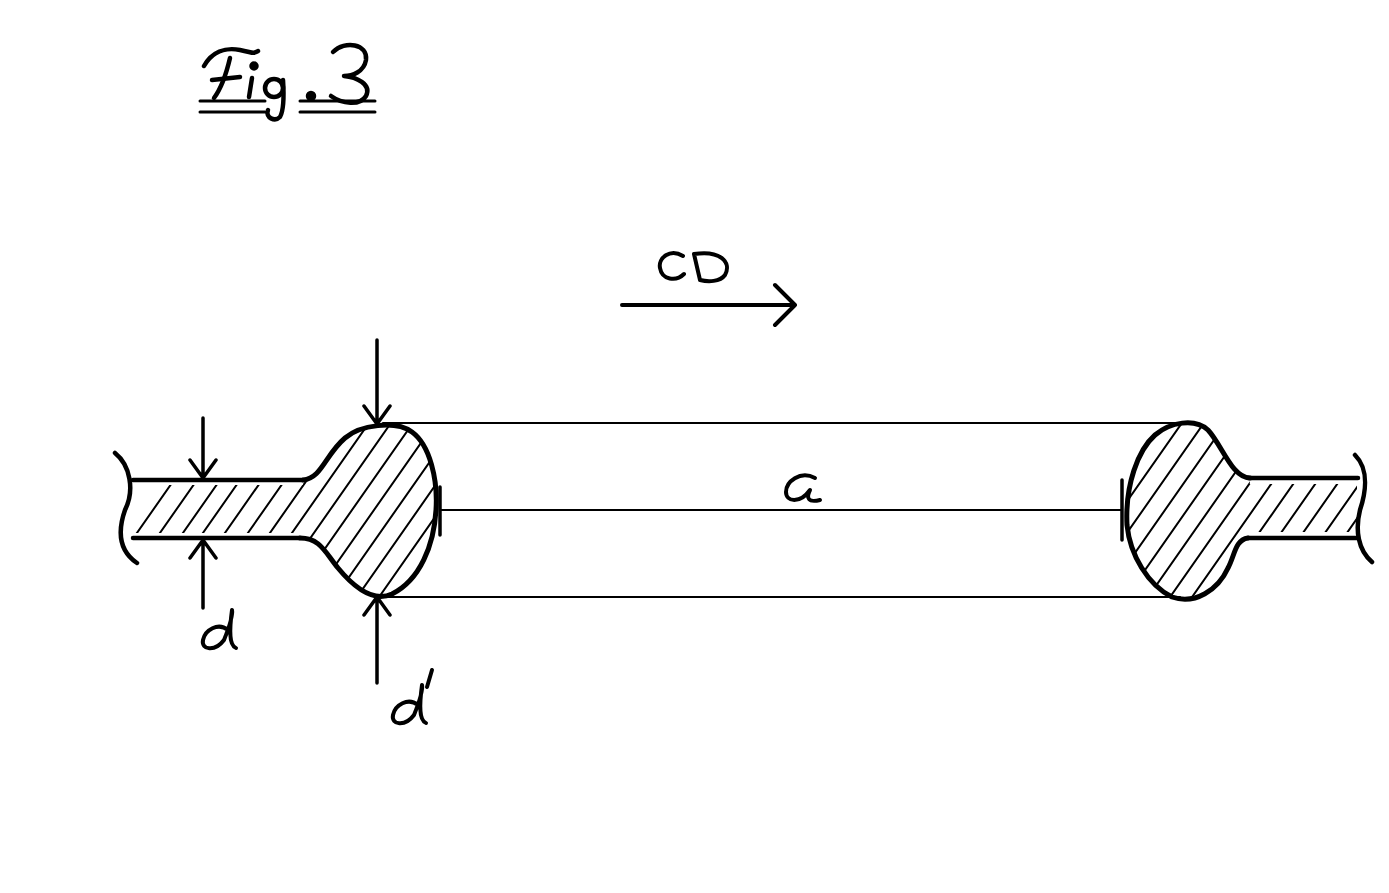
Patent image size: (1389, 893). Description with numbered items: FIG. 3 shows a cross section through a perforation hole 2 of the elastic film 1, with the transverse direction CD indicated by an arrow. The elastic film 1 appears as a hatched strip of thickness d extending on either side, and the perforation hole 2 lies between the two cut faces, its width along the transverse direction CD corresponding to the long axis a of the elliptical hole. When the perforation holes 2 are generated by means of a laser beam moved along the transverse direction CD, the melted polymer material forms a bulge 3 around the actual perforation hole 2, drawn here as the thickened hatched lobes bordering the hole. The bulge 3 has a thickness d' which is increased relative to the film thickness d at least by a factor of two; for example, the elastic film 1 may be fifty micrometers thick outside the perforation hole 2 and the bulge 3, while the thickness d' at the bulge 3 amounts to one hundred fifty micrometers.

The elastic film 1 is at (268, 250).
The perforation hole 2 is at (787, 572).
The bulge 3 is at (1195, 572).